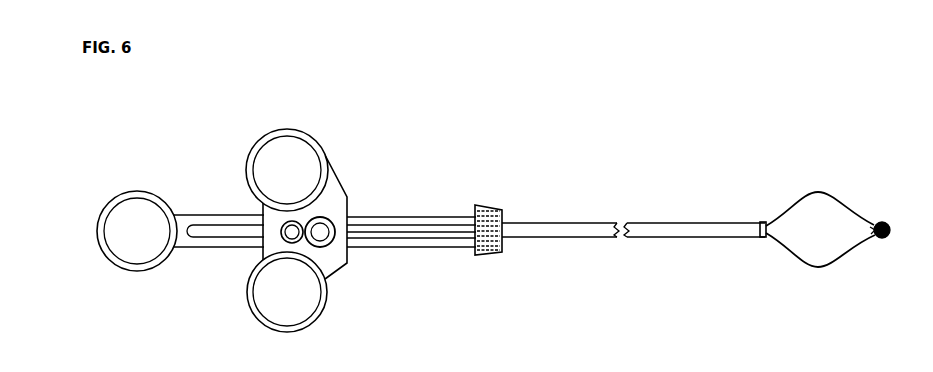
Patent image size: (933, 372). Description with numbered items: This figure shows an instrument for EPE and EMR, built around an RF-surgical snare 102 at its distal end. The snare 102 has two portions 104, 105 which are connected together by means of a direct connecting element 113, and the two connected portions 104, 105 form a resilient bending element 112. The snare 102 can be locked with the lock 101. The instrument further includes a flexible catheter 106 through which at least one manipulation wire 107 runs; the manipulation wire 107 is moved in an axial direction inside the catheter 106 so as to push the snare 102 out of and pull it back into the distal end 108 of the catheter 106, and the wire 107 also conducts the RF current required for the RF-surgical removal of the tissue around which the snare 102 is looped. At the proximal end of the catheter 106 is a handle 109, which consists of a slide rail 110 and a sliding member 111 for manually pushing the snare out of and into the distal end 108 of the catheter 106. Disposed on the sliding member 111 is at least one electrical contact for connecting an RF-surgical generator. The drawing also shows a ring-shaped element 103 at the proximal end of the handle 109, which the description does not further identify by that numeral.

The lock 101 is at (321, 216).
The RF-surgical snare 102 is at (814, 226).
The thumb ring 103 is at (118, 193).
The first portion of snare 104 is at (818, 192).
The second portion of snare 105 is at (797, 265).
The flexible catheter 106 is at (551, 226).
The manipulation wire 107 is at (422, 228).
The distal end of the catheter 108 is at (752, 221).
The handle 109 is at (273, 163).
The slide rail 110 is at (225, 252).
The sliding member 111 is at (332, 262).
The resilient bending element 112 is at (863, 238).
The direct connecting element 113 is at (880, 220).